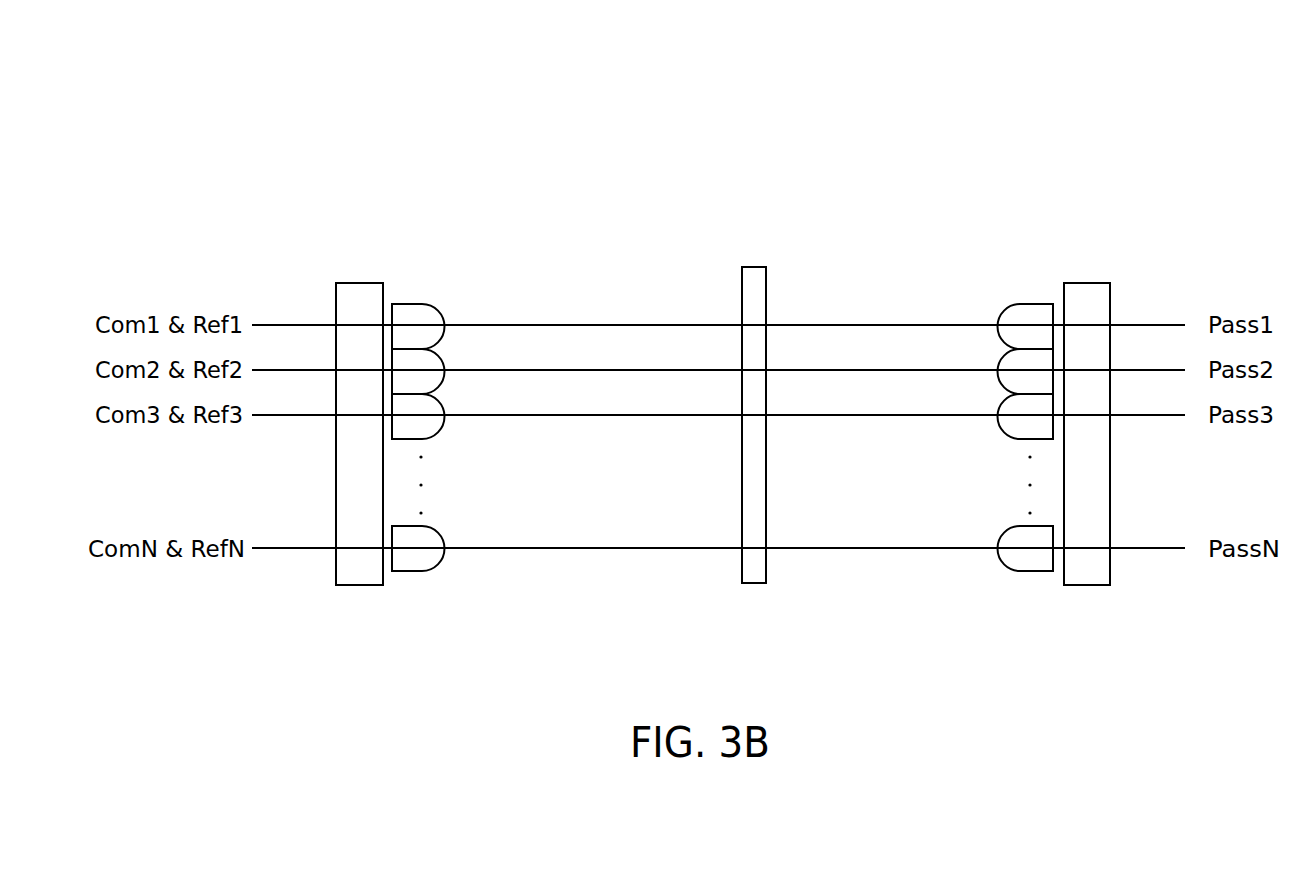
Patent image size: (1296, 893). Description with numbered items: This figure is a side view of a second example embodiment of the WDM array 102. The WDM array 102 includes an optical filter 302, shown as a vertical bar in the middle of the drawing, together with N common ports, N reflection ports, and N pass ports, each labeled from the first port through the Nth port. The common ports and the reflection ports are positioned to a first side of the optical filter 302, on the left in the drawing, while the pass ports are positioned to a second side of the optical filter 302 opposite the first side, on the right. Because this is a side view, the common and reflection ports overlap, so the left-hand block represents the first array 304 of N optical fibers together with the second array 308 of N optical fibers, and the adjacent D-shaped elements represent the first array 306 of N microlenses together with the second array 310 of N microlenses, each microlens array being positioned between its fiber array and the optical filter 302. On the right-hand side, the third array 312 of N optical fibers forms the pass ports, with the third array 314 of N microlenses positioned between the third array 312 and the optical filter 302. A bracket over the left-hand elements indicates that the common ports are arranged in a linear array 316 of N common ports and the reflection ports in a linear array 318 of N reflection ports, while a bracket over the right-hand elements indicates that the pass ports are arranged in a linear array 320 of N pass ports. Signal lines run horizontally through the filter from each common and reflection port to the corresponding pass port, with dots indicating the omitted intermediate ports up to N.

The WDM array 102 is at (999, 53).
The optical filter 302 is at (753, 266).
The first array of N optical fibers 304 is at (331, 397).
The first array of N microlenses 306 is at (458, 390).
The second array of N optical fibers 308 is at (363, 270).
The second array of N microlenses 310 is at (424, 277).
The third array of N optical fibers 312 is at (1093, 272).
The third array of N microlenses 314 is at (1027, 278).
The linear array of N common ports 316 is at (399, 366).
The linear array of N reflection ports 318 is at (528, 201).
The linear array of N pass ports 320 is at (1136, 201).